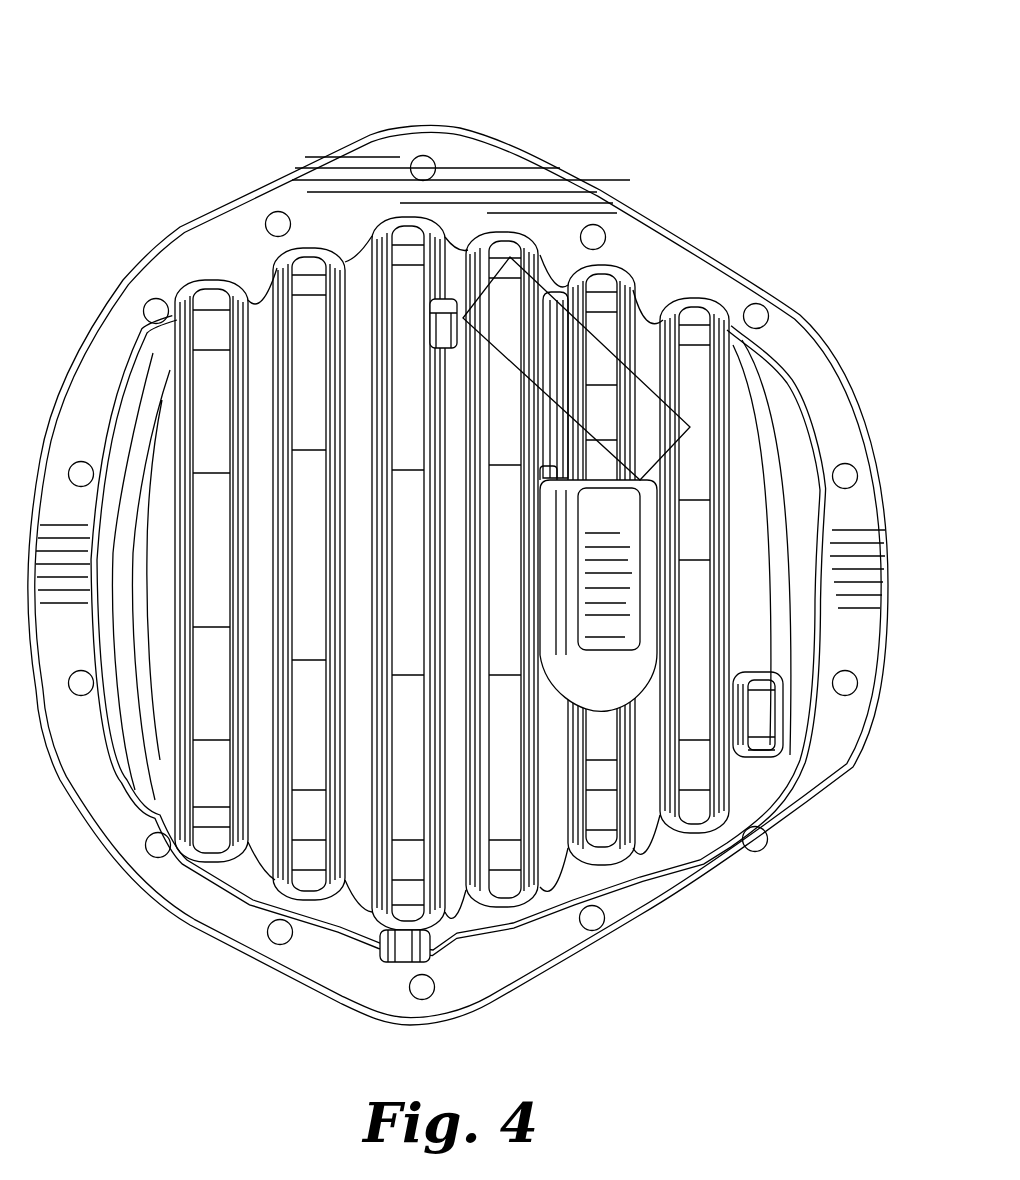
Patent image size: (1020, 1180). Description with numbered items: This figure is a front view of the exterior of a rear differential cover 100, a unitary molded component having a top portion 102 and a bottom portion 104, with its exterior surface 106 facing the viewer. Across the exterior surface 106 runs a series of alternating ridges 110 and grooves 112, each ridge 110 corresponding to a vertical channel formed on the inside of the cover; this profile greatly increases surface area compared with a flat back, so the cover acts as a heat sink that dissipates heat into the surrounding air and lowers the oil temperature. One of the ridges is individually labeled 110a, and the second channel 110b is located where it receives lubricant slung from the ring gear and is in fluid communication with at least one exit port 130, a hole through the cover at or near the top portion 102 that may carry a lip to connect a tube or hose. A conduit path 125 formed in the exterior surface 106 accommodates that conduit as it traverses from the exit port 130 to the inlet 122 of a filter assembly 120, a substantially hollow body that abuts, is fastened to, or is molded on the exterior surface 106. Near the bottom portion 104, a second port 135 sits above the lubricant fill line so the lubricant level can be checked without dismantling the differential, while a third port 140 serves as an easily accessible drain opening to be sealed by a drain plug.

The cover 100 is at (212, 58).
The top portion 102 is at (170, 204).
The bottom portion 104 is at (125, 958).
The exterior surface 106 is at (173, 748).
The ridge 110 is at (452, 503).
The fin 110a is at (648, 514).
The second channel 110b is at (410, 405).
The groove 112 is at (260, 820).
The filter assembly 120 is at (637, 557).
The inlet 122 is at (608, 470).
The conduit path 125 is at (590, 330).
The exit port 130 is at (443, 299).
The second port 135 is at (767, 727).
The third port 140 is at (395, 955).